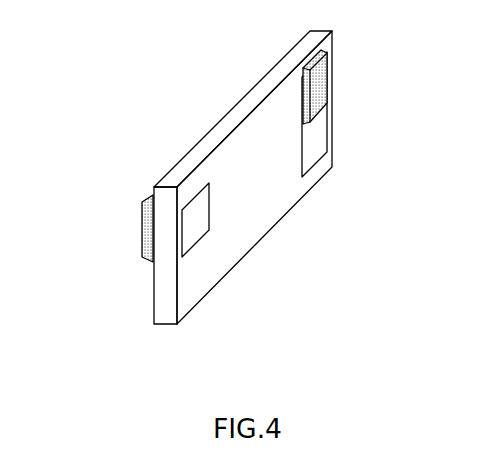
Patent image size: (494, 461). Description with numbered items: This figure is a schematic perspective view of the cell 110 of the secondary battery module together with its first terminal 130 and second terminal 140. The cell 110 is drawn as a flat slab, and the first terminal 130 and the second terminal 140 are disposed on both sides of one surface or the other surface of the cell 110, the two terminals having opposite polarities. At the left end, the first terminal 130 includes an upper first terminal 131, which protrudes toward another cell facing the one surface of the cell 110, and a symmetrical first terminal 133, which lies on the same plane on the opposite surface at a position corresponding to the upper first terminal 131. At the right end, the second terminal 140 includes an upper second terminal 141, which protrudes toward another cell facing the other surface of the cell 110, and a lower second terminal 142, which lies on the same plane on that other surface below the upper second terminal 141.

The cell 110 is at (240, 104).
The first terminal 130 is at (113, 222).
The upper first terminal 131 is at (153, 214).
The symmetrical first terminal 133 is at (191, 239).
The second terminal 140 is at (377, 113).
The upper second terminal 141 is at (319, 87).
The lower second terminal 142 is at (315, 138).